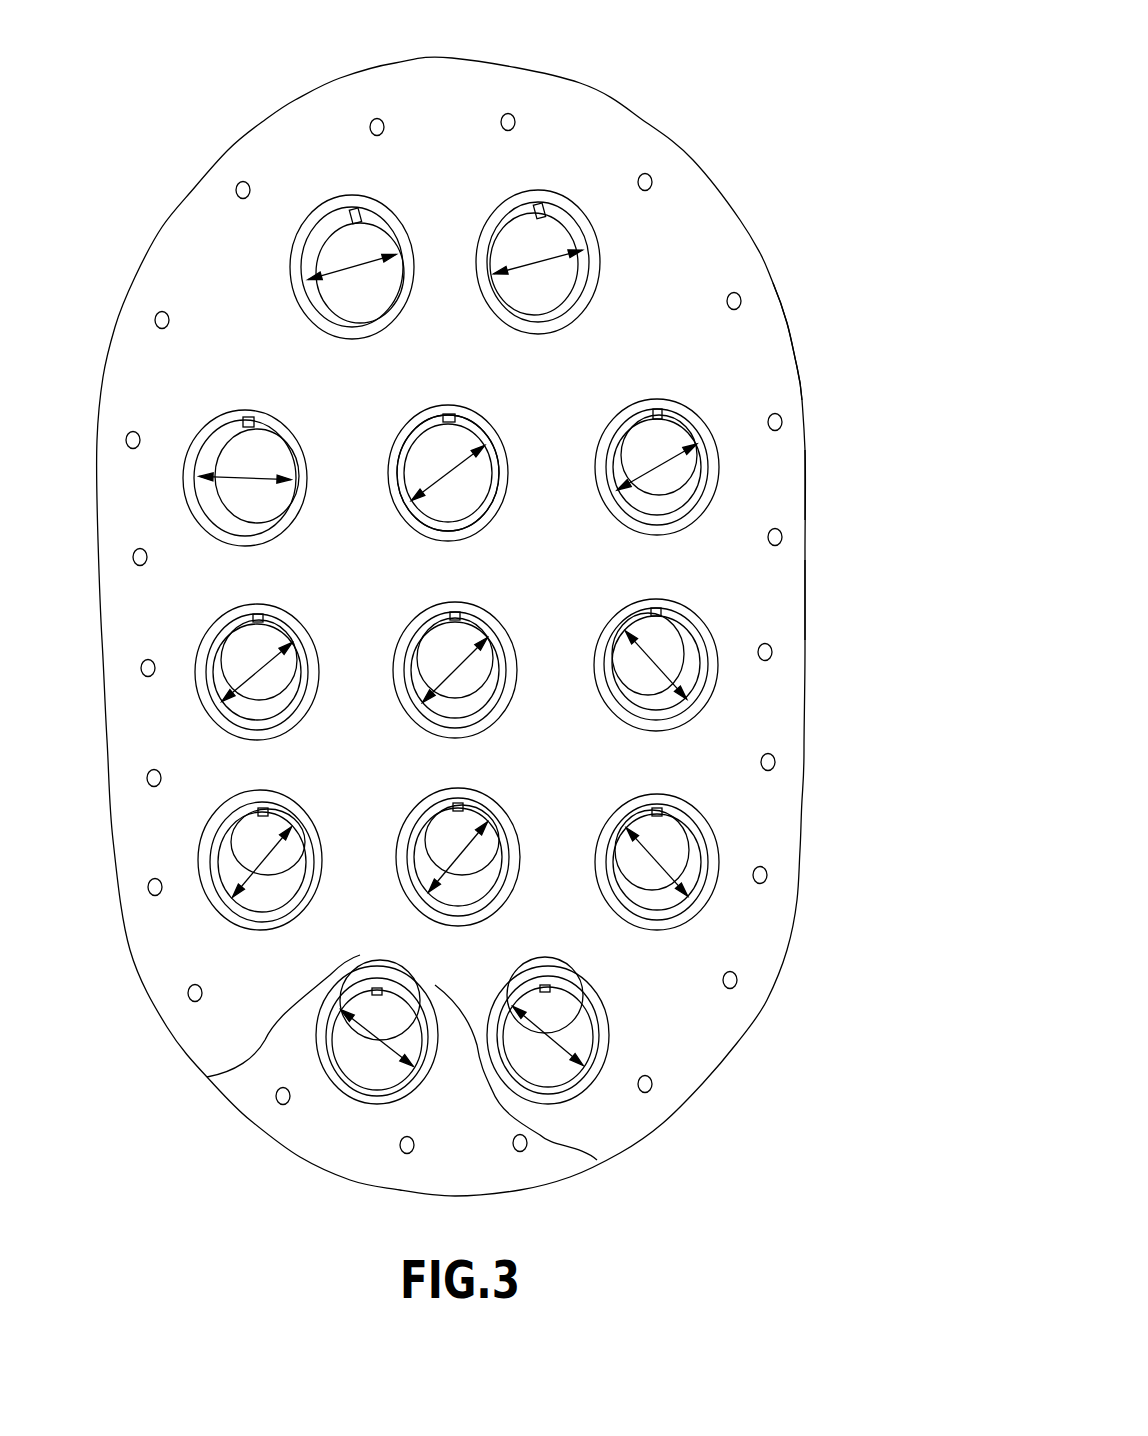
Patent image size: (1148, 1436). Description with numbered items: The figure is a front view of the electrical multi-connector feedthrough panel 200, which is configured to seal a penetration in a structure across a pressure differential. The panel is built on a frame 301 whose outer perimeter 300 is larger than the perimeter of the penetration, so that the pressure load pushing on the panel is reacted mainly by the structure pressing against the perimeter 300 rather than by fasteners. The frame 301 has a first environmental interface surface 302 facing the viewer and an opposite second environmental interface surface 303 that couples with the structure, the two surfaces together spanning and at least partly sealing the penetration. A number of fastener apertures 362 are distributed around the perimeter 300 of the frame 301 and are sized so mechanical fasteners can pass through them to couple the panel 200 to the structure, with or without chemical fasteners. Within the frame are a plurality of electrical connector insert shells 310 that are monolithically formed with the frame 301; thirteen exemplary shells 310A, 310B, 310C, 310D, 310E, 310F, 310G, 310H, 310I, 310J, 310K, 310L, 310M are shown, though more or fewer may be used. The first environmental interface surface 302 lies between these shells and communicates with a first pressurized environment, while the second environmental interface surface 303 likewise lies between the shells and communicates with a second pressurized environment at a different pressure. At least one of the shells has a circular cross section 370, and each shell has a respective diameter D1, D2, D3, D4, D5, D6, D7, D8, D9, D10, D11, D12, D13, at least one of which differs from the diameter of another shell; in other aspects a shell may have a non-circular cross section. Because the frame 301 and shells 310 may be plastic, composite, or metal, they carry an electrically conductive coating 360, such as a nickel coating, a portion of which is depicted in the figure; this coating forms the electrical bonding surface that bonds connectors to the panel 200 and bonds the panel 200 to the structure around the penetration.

The electrical multi-connector feedthrough panel 200 is at (498, 621).
The perimeter 300 is at (697, 163).
The frame 301 is at (777, 343).
The first environmental interface surface 302 is at (774, 485).
The second environmental interface surface 303 is at (804, 600).
The plurality of electrical connector insert shells 310 is at (468, 595).
The electrical connector insert shell 310A is at (298, 282).
The electrical connector insert shell 310B is at (498, 305).
The electrical connector insert shell 310C is at (218, 533).
The electrical connector insert shell 310D is at (415, 525).
The electrical connector insert shell 310E is at (607, 512).
The electrical connector insert shell 310F is at (220, 720).
The electrical connector insert shell 310G is at (423, 713).
The electrical connector insert shell 310H is at (612, 708).
The electrical connector insert shell 310I is at (257, 923).
The electrical connector insert shell 310J is at (498, 898).
The electrical connector insert shell 310K is at (634, 916).
The electrical connector insert shell 310L is at (398, 1095).
The electrical connector insert shell 310M is at (600, 1058).
The electrically conductive coating 360 is at (360, 1160).
The fastener apertures 362 is at (776, 760).
The circular cross section 370 is at (430, 400).
The diameter D1 is at (355, 265).
The diameter D2 is at (537, 263).
The diameter D3 is at (248, 467).
The diameter D4 is at (445, 468).
The diameter D5 is at (658, 466).
The diameter D6 is at (258, 670).
The diameter D7 is at (452, 667).
The diameter D8 is at (658, 666).
The diameter D9 is at (262, 868).
The diameter D10 is at (458, 860).
The diameter D11 is at (660, 862).
The diameter D12 is at (377, 1040).
The diameter D13 is at (543, 1037).